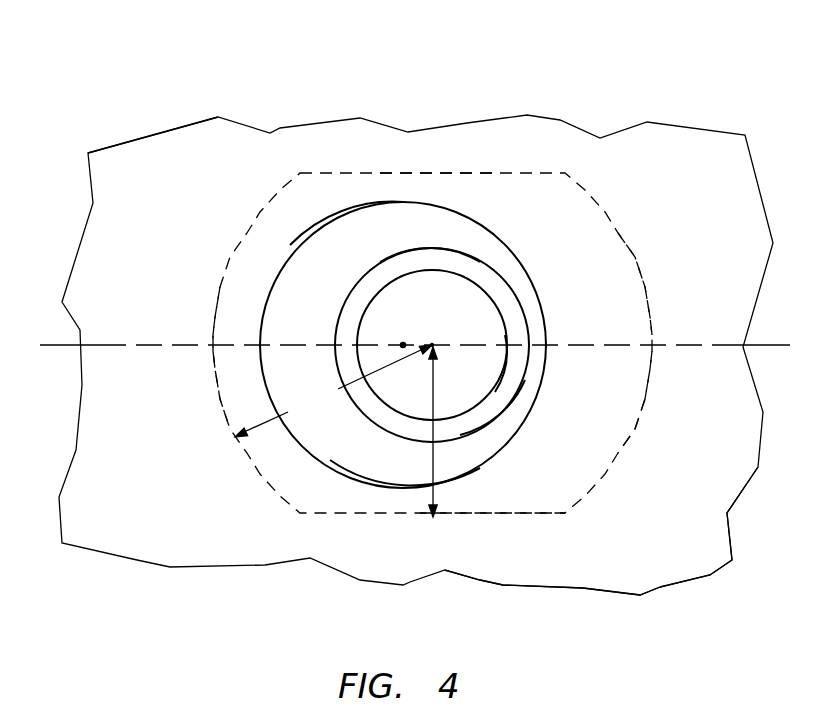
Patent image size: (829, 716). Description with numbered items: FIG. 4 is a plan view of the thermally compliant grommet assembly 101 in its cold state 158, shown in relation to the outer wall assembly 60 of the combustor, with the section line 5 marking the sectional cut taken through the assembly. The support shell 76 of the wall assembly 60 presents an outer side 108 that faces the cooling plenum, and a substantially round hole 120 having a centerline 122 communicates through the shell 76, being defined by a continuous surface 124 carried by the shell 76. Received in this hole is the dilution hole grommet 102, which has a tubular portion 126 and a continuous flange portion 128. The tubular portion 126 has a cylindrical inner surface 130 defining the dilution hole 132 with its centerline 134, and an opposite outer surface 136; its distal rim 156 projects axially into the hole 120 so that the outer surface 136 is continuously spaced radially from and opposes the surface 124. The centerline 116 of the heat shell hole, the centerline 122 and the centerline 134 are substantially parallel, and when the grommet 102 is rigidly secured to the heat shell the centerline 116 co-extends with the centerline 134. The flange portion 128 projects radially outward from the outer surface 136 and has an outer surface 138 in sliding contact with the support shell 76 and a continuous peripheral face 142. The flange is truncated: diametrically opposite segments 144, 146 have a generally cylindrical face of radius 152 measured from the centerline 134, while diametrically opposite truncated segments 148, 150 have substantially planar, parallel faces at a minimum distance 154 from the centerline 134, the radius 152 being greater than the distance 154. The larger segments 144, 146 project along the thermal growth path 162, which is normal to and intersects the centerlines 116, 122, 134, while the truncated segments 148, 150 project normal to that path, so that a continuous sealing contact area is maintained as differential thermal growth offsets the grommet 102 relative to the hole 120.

The section line 5 is at (40, 345).
The outer wall assembly 60 is at (66, 165).
The support shell 76 is at (596, 603).
The grommet assembly 101 is at (115, 145).
The dilution hole grommet 102 is at (627, 211).
The outer side 108 is at (693, 550).
The centerline 116 is at (433, 344).
The round hole 120 is at (338, 287).
The centerline 122 is at (403, 345).
The continuous surface 124 is at (327, 227).
The tubular portion 126 is at (507, 300).
The flange portion 128 is at (632, 303).
The inner surface 130 is at (448, 272).
The dilution hole 132 is at (425, 393).
The centerline 134 is at (433, 345).
The outer surface 136 is at (433, 248).
The outer surface 138 is at (620, 420).
The peripheral face 142 is at (630, 248).
The flange segment 144 is at (207, 371).
The flange segment 146 is at (633, 375).
The truncated segment 148 is at (456, 497).
The truncated segment 150 is at (417, 182).
The radius 152 is at (333, 391).
The minimum distance 154 is at (430, 463).
The distal rim 156 is at (507, 382).
The cold state 158 is at (160, 80).
The thermal growth path 162 is at (240, 343).